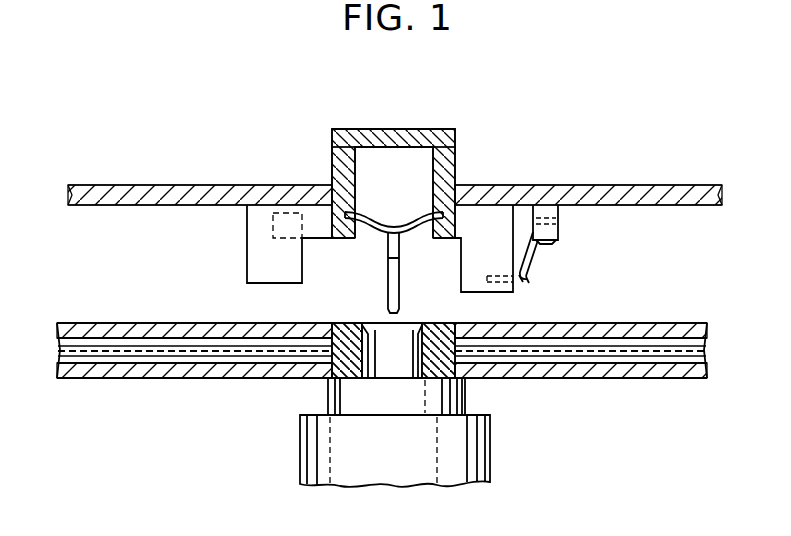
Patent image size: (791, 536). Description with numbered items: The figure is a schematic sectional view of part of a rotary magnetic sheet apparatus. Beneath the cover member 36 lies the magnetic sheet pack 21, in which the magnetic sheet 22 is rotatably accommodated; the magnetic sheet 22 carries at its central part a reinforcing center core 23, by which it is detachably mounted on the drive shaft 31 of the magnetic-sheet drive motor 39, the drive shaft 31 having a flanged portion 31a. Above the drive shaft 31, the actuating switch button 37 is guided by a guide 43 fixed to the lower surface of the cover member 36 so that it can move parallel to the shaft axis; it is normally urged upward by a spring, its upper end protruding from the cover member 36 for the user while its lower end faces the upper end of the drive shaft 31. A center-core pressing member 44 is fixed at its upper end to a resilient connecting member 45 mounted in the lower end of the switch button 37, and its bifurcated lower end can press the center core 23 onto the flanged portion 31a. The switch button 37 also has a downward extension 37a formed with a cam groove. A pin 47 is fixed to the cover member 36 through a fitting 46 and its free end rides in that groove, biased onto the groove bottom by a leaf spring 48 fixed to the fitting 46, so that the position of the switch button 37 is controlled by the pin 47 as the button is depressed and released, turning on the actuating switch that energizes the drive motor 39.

The magnetic sheet pack 21 is at (678, 373).
The magnetic sheet 22 is at (586, 352).
The center core 23 is at (458, 358).
The drive shaft 31 is at (372, 360).
The flanged portion 31a is at (328, 400).
The cover member 36 is at (645, 186).
The actuating switch button 37 is at (430, 129).
The downward extension 37a is at (463, 258).
The magnetic-sheet drive motor 39 is at (487, 471).
The guide 43 is at (248, 262).
The center-core pressing member 44 is at (388, 267).
The connecting member 45 is at (372, 224).
The fitting 46 is at (556, 210).
The pin 47 is at (522, 281).
The leaf spring 48 is at (532, 268).